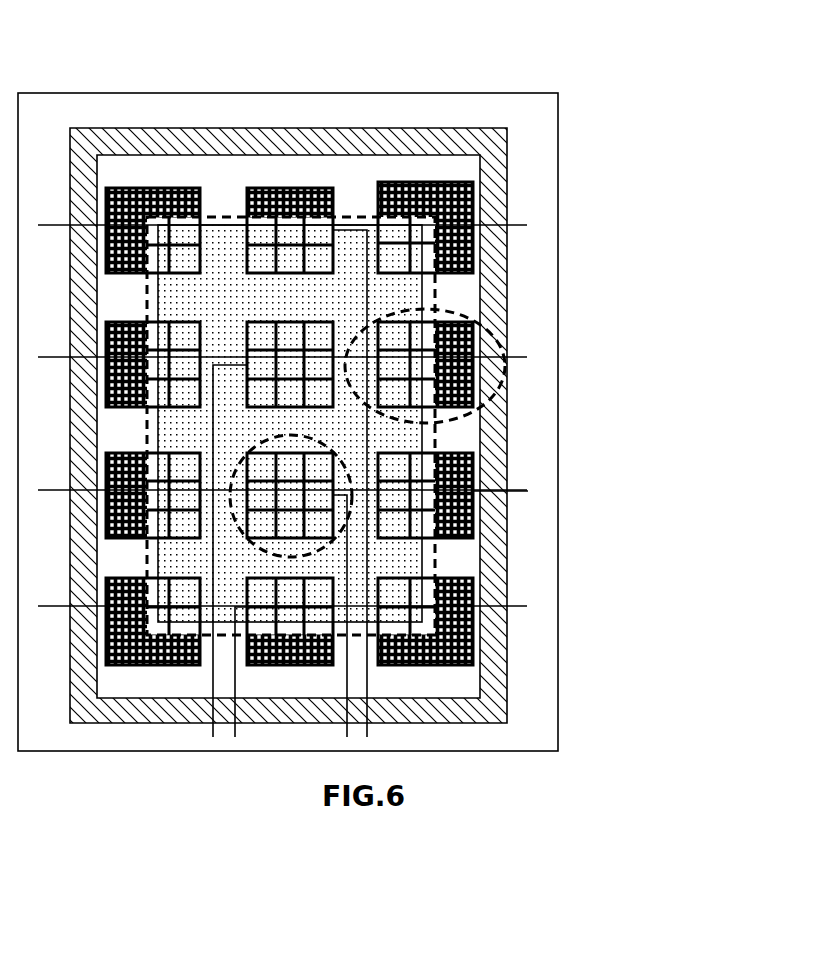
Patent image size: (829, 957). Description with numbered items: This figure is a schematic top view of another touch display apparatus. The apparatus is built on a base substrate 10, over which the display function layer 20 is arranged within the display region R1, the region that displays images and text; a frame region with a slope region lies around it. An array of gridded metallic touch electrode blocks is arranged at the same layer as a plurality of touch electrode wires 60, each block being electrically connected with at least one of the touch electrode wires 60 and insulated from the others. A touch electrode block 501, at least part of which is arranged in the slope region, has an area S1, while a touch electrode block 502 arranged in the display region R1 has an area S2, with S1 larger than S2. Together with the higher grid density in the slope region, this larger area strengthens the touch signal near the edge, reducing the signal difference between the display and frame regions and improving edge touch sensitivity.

The base substrate 10 is at (533, 207).
The display region R1 is at (440, 294).
The touch electrode block 501 is at (455, 422).
The touch electrode block 502 is at (335, 452).
The touch electrode wires 60 is at (520, 488).
The display function layer 20 is at (422, 553).